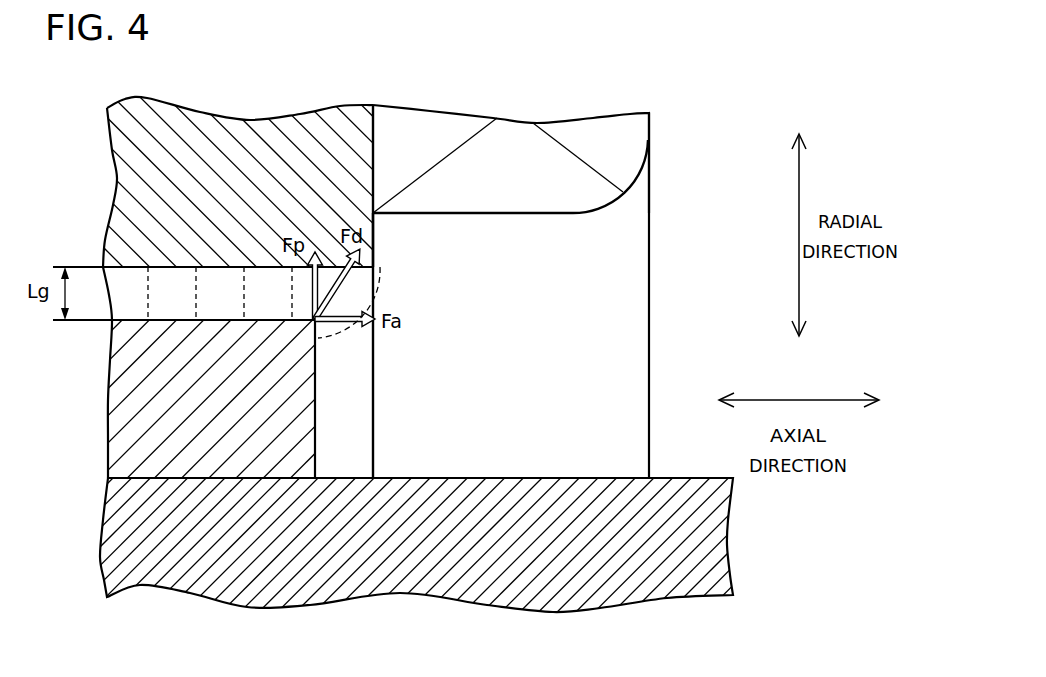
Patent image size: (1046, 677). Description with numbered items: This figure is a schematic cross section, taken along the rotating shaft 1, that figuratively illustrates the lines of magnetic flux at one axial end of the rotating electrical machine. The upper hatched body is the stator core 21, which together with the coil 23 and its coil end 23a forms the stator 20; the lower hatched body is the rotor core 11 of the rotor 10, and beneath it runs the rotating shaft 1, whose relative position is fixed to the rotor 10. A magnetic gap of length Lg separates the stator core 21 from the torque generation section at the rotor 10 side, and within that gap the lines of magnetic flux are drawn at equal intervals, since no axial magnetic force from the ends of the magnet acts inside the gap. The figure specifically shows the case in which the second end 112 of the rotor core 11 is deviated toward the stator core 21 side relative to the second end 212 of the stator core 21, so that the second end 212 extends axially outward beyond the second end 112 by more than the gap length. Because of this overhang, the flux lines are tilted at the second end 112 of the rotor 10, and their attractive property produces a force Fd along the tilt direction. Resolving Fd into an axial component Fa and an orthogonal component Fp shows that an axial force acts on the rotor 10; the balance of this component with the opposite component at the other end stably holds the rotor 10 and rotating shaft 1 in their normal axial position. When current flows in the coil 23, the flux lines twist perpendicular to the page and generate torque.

The rotating shaft 1 is at (718, 533).
The rotor 10 is at (356, 392).
The rotor core 11 is at (130, 415).
The second end of the rotor core 112 is at (315, 440).
The stator 20 is at (676, 181).
The stator core 21 is at (127, 175).
The second end of the stator core 212 is at (373, 228).
The coil 23 is at (633, 235).
The coil end 23a is at (633, 141).